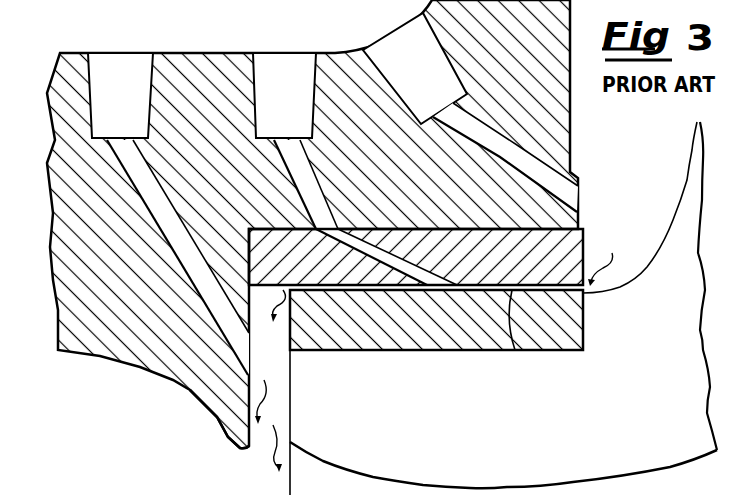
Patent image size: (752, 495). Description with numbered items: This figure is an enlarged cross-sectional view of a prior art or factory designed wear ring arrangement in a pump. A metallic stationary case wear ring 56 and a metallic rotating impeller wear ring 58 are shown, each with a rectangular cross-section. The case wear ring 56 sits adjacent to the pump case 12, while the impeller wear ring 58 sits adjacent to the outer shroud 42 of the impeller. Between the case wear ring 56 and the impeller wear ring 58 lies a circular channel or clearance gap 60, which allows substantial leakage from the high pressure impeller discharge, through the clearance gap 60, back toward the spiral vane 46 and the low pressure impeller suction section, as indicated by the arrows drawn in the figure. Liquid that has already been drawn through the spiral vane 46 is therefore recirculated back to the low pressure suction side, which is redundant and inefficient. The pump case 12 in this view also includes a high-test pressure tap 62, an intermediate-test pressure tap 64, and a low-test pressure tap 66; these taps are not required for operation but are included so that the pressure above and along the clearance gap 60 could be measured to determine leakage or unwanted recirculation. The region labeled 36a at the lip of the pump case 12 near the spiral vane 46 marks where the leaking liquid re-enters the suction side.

The pump case 12 is at (522, 69).
The low-test pressure tap 66 is at (138, 68).
The intermediate-test pressure tap 64 is at (285, 68).
The high-test pressure tap 62 is at (392, 42).
The case wear ring 56 is at (584, 238).
The impeller wear ring 58 is at (585, 323).
The clearance gap 60 is at (515, 350).
The outer shroud 42 is at (660, 402).
The spiral vane 46 is at (314, 392).
The lip of body 36a is at (231, 438).